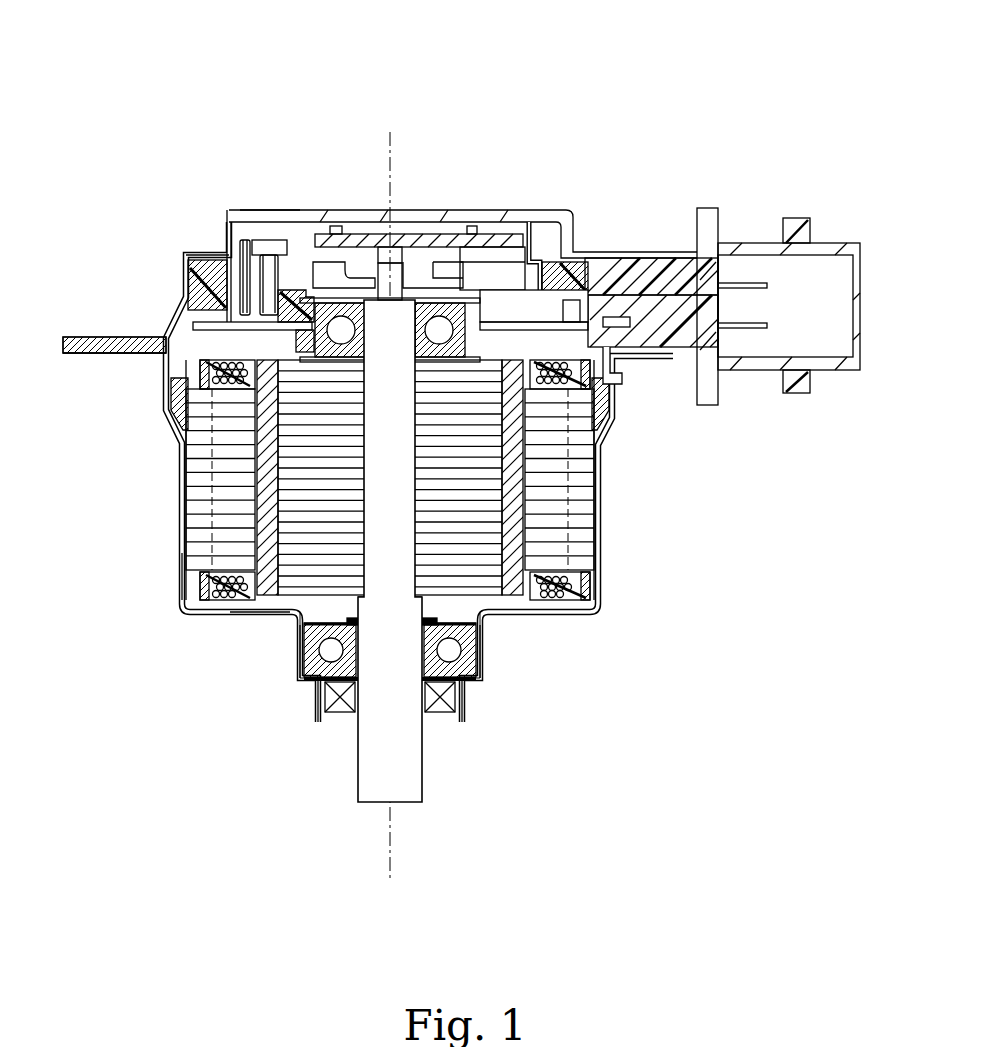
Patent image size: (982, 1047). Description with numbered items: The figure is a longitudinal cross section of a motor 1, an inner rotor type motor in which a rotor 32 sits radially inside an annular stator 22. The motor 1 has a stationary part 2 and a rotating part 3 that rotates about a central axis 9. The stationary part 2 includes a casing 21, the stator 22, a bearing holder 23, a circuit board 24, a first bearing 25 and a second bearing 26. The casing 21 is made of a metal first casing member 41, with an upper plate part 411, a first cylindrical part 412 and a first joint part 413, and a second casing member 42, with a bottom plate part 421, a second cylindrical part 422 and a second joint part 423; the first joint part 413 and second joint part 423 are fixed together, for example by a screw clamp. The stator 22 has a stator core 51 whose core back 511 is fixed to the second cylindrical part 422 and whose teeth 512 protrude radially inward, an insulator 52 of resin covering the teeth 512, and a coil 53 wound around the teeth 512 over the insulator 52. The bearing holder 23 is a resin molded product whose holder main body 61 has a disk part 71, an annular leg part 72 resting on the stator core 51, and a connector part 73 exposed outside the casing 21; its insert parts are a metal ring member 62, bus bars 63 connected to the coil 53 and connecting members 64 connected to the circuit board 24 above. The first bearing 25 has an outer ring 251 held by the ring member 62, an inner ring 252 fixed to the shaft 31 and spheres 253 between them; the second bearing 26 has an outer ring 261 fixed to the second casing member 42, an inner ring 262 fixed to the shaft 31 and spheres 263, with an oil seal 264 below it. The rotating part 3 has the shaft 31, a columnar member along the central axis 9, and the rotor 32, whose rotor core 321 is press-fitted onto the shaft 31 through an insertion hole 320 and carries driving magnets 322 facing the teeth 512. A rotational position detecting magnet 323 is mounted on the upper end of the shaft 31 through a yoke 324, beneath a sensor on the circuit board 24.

The motor 1 is at (461, 451).
The stationary part 2 is at (456, 422).
The casing 21 is at (611, 619).
The stator 22 is at (486, 480).
The bearing holder 23 is at (518, 340).
The circuit board 24 is at (425, 208).
The first bearing 25 is at (352, 314).
The outer ring 251 is at (320, 352).
The inner ring 252 is at (348, 262).
The spheres 253 is at (187, 307).
The second bearing 26 is at (332, 635).
The outer ring 261 is at (297, 655).
The inner ring 262 is at (322, 681).
The spheres 263 is at (343, 683).
The oil seal 264 is at (445, 698).
The rotating part 3 is at (273, 608).
The shaft 31 is at (414, 755).
The rotor 32 is at (416, 537).
The insertion hole 320 is at (405, 577).
The rotor core 321 is at (482, 575).
The driving magnets 322 is at (513, 572).
The rotational position detecting magnet 323 is at (490, 234).
The yoke 324 is at (405, 250).
The first casing member 41 is at (181, 225).
The upper plate part 411 is at (260, 176).
The first cylindrical part 412 is at (180, 253).
The first joint part 413 is at (118, 335).
The second casing member 42 is at (176, 544).
The bottom plate part 421 is at (239, 653).
The second cylindrical part 422 is at (182, 553).
The second joint part 423 is at (95, 357).
The stator core 51 is at (461, 479).
The core back 511 is at (578, 500).
The teeth 512 is at (550, 458).
The insulator 52 is at (595, 570).
The coil 53 is at (595, 597).
The holder main body 61 is at (575, 226).
The ring member 62 is at (465, 247).
The bus bars 63 is at (283, 240).
The connecting members 64 is at (531, 232).
The disk part 71 is at (500, 247).
The annular leg part 72 is at (163, 352).
The connector part 73 is at (735, 248).
The central axis 9 is at (388, 162).